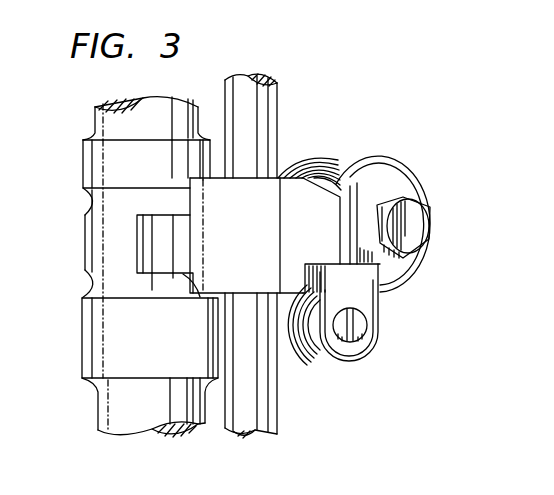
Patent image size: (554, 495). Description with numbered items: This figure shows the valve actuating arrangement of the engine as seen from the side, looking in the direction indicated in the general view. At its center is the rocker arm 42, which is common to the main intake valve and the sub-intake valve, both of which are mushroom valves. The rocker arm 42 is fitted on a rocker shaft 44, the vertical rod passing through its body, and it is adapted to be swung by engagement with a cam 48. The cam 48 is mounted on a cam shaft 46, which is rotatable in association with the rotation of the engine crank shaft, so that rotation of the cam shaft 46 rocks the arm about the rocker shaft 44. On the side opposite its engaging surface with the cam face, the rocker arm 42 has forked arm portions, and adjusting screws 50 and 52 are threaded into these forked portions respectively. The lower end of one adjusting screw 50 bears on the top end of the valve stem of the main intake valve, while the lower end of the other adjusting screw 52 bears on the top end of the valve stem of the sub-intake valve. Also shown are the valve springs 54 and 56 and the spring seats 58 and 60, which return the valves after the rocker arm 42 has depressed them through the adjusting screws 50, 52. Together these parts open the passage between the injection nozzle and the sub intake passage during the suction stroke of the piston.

The rocker arm 42 is at (325, 217).
The rocker shaft 44 is at (277, 90).
The cam shaft 46 is at (100, 123).
The cam 48 is at (88, 239).
The adjusting screw 50 is at (420, 235).
The adjusting screw 52 is at (364, 323).
The valve spring 54 is at (321, 161).
The valve spring 56 is at (312, 355).
The spring seat 58 is at (397, 172).
The spring seat 60 is at (355, 361).